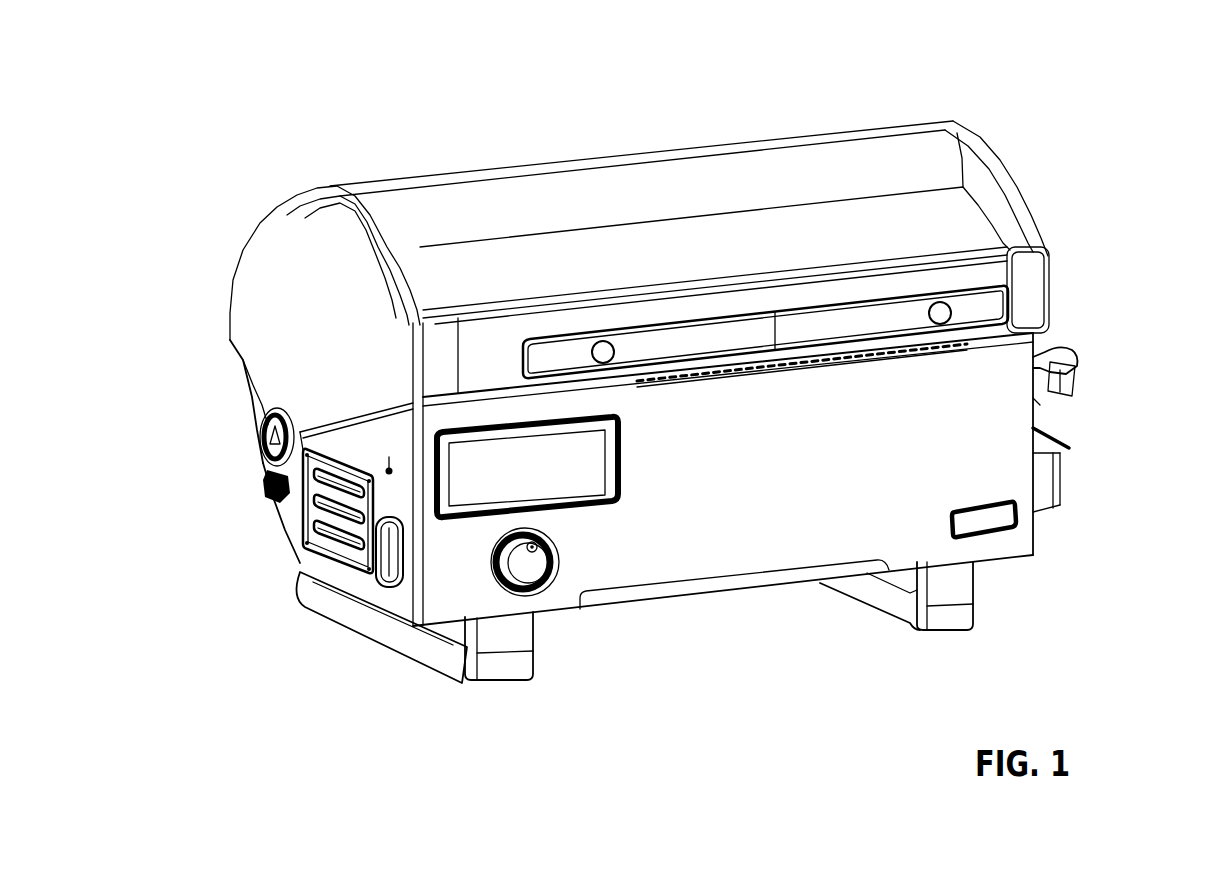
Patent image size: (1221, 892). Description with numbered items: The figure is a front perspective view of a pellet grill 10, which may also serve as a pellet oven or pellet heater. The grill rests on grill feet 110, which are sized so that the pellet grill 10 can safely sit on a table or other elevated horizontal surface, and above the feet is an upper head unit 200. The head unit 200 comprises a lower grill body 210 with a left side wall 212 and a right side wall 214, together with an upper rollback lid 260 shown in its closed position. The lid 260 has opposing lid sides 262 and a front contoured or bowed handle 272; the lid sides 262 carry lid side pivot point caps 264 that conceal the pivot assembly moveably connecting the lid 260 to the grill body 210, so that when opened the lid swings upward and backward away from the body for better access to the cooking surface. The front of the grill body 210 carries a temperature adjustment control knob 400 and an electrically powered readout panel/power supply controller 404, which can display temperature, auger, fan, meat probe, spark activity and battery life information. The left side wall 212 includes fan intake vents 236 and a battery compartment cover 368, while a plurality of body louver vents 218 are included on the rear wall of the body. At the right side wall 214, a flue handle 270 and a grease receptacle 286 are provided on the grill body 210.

The pellet grill 10 is at (1052, 103).
The grill feet 110 is at (440, 655).
The upper head unit 200 is at (1097, 294).
The lower grill body 210 is at (1026, 537).
The left side wall 212 is at (236, 409).
The right side wall 214 is at (1048, 405).
The body louver vents 218 is at (268, 525).
The fan intake vents 236 is at (335, 540).
The upper rollback lid 260 is at (440, 178).
The lid sides 262 is at (226, 289).
The lid side pivot point caps 264 is at (259, 455).
The flue handle 270 is at (1088, 377).
The front contoured or bowed handle 272 is at (857, 336).
The grease receptacle 286 is at (1070, 479).
The battery compartment cover 368 is at (382, 576).
The temperature adjustment control knob 400 is at (543, 567).
The readout panel/power supply controller 404 is at (573, 472).